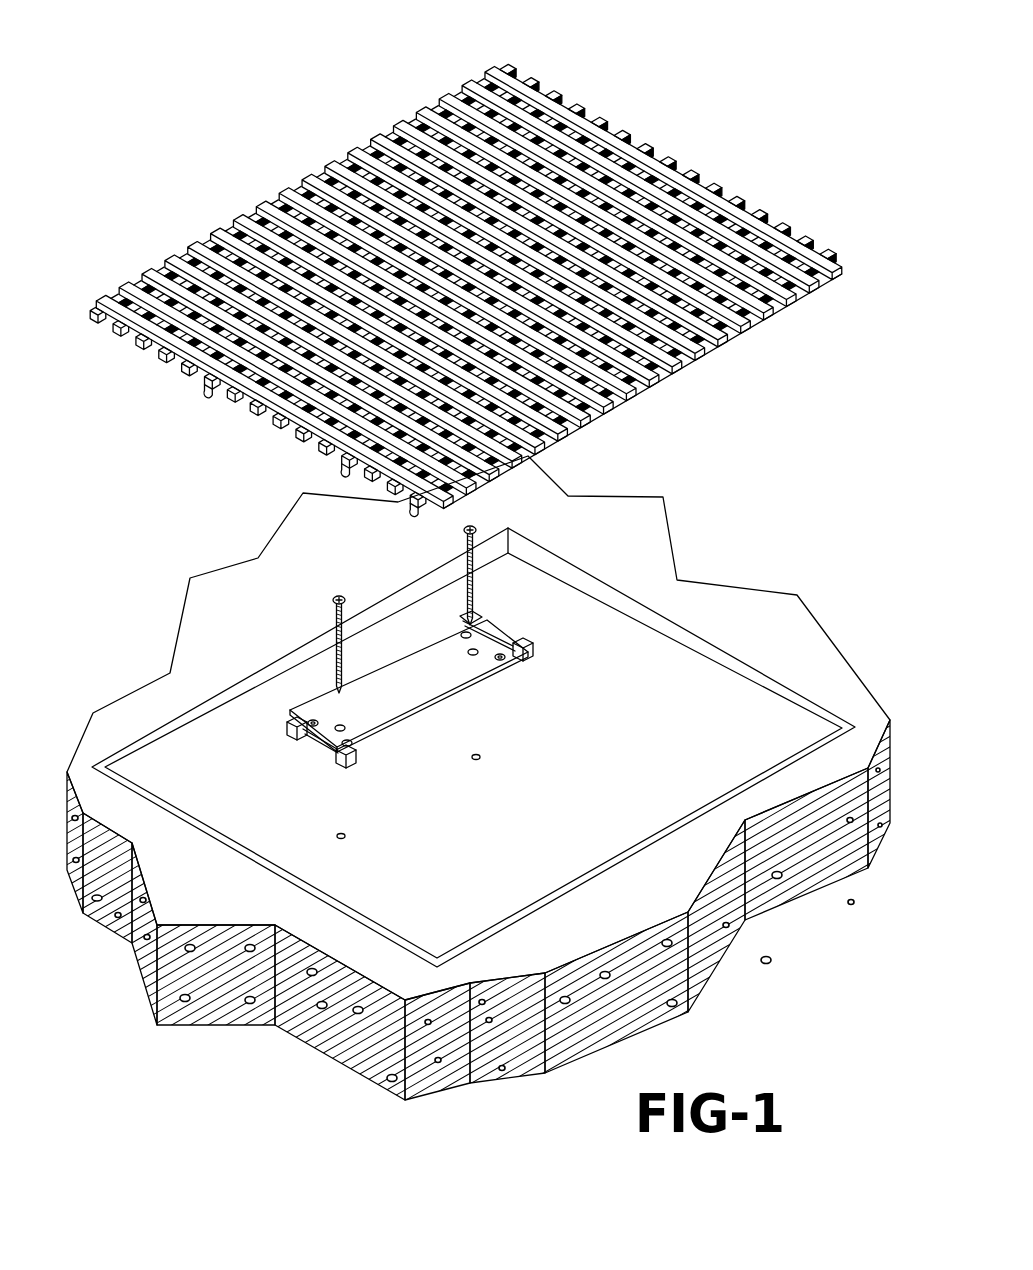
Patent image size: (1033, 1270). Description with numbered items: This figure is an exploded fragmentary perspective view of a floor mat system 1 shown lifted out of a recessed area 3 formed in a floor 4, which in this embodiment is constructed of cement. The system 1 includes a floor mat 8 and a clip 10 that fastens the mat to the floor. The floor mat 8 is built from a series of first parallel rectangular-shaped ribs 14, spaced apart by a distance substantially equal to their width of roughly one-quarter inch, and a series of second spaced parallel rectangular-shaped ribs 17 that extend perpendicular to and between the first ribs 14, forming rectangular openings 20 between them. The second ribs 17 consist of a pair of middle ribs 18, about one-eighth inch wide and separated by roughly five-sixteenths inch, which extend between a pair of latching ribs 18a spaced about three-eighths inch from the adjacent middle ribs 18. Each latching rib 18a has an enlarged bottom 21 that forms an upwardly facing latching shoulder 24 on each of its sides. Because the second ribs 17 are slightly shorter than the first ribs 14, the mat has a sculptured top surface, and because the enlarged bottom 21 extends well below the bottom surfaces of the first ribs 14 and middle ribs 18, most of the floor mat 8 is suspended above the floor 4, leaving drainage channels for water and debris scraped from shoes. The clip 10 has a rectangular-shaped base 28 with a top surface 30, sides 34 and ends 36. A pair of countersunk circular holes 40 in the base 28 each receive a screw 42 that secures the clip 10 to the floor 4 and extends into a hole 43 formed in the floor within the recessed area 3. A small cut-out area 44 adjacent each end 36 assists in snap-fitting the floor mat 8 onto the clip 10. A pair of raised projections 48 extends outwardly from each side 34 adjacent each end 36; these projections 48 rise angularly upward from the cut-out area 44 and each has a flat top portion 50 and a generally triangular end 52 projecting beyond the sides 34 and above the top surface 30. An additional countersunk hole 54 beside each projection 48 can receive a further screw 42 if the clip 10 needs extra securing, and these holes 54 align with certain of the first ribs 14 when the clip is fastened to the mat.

The floor mat system 1 is at (690, 105).
The recessed area 3 is at (672, 663).
The floor 4 is at (655, 548).
The floor mat 8 is at (728, 173).
The clip 10 is at (497, 724).
The first parallel rectangular-shaped ribs 14 is at (497, 76).
The second spaced parallel rectangular-shaped ribs 17 is at (770, 210).
The middle ribs 18 is at (310, 220).
The latching ribs 18a is at (447, 160).
The rectangular openings 20 is at (553, 118).
The enlarged bottom 21 is at (210, 400).
The latching shoulder 24 is at (217, 393).
The base 28 is at (403, 735).
The top surface 30 is at (388, 667).
The sides 34 is at (352, 640).
The ends 36 is at (523, 637).
The countersunk circular holes 40 is at (423, 672).
The screw 42 is at (475, 525).
The hole 43 is at (478, 760).
The cut-out area 44 is at (478, 640).
The raised projections 48 is at (540, 647).
The flat top portion 50 is at (523, 640).
The triangular end 52 is at (505, 660).
The additional countersunk hole 54 is at (492, 655).